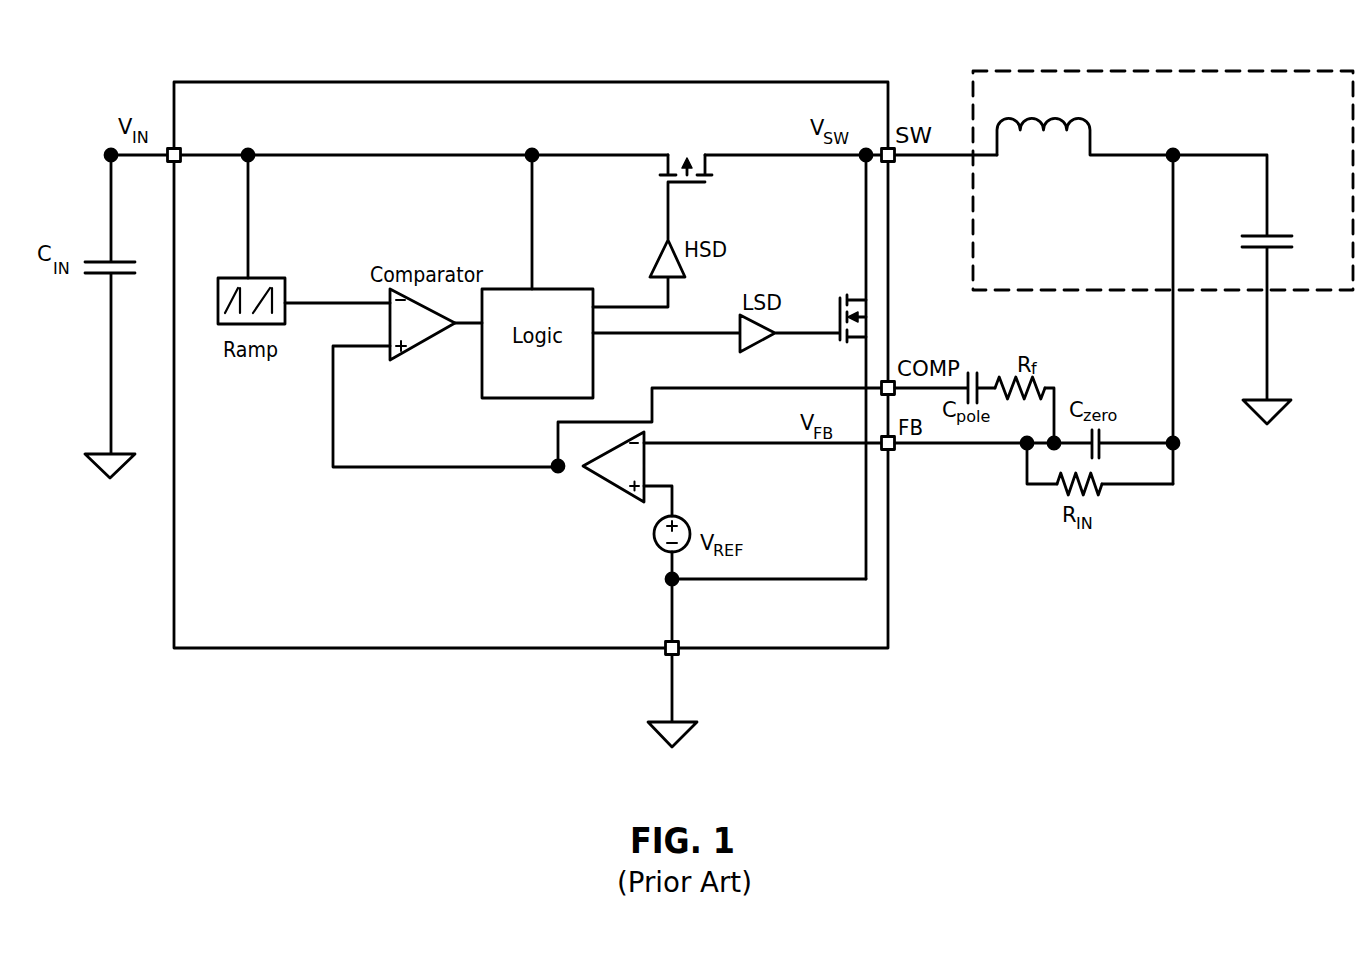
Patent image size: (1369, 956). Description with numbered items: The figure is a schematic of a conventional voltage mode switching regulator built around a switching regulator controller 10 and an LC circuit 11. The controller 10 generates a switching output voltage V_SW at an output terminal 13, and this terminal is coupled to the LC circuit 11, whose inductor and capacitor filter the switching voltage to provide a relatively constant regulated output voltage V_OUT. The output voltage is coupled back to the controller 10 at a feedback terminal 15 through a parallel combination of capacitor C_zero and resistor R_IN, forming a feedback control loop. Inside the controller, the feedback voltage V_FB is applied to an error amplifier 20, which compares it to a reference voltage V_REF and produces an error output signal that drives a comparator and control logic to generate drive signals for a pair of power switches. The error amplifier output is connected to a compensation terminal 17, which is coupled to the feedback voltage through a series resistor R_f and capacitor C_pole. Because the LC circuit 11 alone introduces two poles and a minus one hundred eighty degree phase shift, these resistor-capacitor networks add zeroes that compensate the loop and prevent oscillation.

The switching regulator controller 10 is at (812, 82).
The LC circuit 11 is at (1241, 71).
The output terminal 13 is at (895, 162).
The feedback (FB) terminal 15 is at (895, 450).
The COMP terminal 17 is at (895, 395).
The error amplifier 20 is at (608, 486).